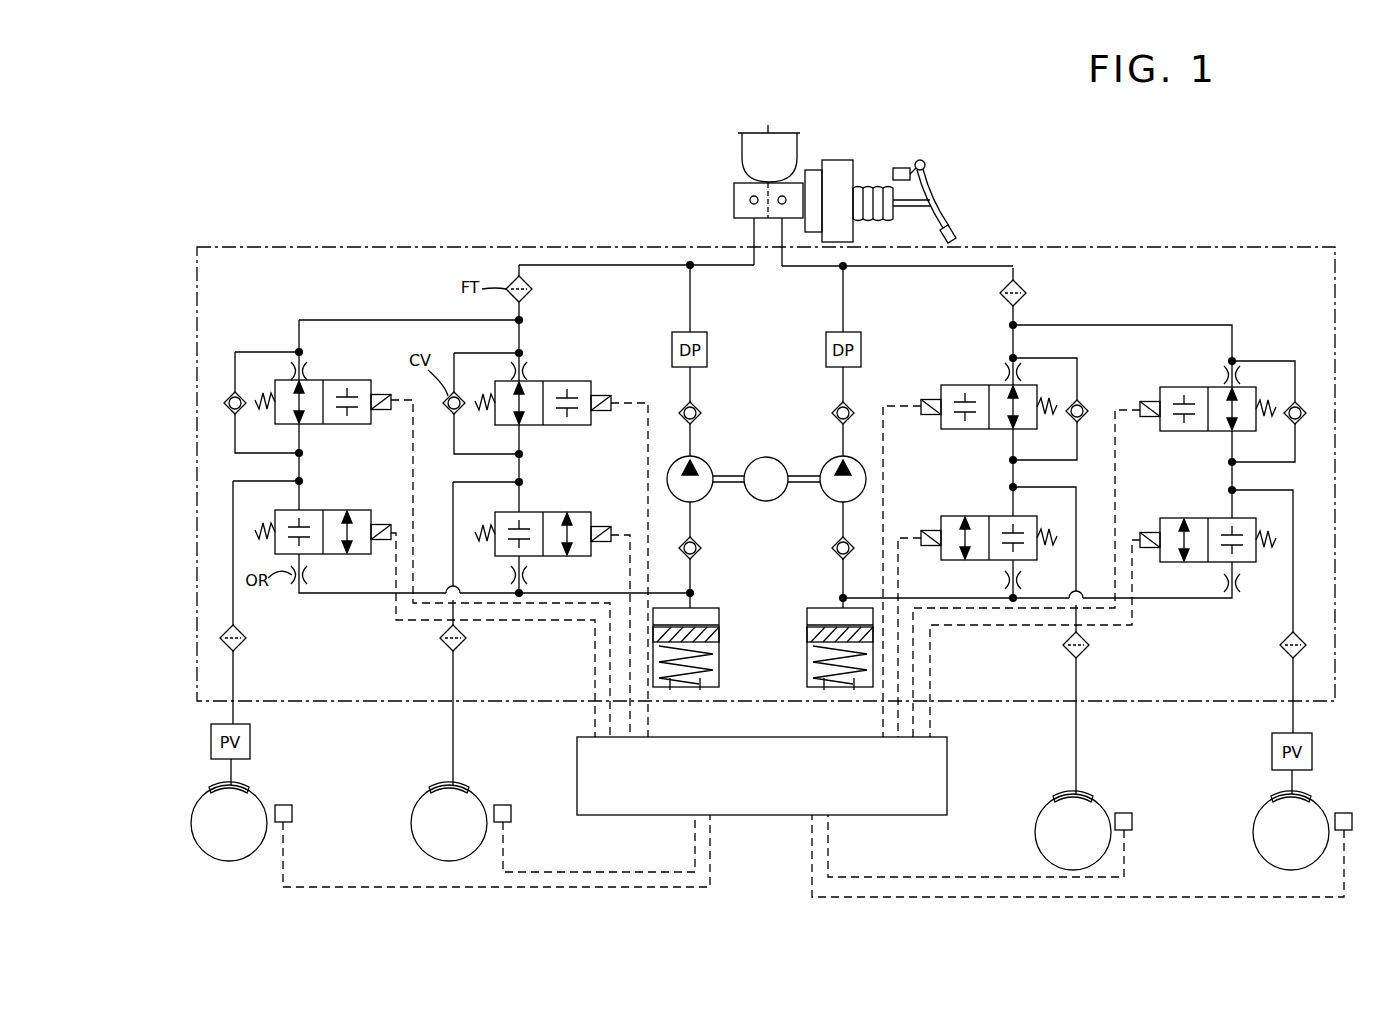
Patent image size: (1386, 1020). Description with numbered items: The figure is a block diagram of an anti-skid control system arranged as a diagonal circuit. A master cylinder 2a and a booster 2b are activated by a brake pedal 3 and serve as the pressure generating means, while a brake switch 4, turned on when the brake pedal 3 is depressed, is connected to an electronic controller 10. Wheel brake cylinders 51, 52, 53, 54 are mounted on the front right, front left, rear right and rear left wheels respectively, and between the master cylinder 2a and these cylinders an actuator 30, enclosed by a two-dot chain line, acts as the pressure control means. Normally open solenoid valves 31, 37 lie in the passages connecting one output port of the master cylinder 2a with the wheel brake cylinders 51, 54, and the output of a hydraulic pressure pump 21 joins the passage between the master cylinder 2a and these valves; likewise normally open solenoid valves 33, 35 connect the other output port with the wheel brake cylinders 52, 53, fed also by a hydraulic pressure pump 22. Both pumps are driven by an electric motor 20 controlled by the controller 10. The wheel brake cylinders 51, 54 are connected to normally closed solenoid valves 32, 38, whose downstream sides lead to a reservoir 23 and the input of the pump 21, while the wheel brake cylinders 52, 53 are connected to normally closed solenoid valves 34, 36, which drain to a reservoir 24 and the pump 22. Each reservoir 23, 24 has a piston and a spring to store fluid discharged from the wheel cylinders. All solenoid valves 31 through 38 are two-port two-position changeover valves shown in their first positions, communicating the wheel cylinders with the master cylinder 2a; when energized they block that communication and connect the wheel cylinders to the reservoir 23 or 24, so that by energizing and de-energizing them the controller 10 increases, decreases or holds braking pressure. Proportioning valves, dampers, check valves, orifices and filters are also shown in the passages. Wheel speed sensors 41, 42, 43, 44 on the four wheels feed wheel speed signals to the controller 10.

The master cylinder 2a is at (734, 196).
The booster 2b is at (822, 162).
The brake pedal 3 is at (936, 204).
The brake switch 4 is at (902, 168).
The electronic controller 10 is at (947, 737).
The electric motor 20 is at (768, 502).
The hydraulic pressure pump 21 is at (705, 462).
The hydraulic pressure pump 22 is at (830, 462).
The reservoir 23 is at (708, 608).
The reservoir 24 is at (828, 608).
The actuator 30 is at (1115, 247).
The normally open solenoid valve 31 is at (543, 381).
The normally closed solenoid valve 32 is at (540, 512).
The normally open solenoid valve 33 is at (992, 385).
The normally closed solenoid valve 34 is at (988, 516).
The normally open solenoid valve 35 is at (1209, 387).
The normally closed solenoid valve 36 is at (1208, 518).
The normally open solenoid valve 37 is at (323, 380).
The normally closed solenoid valve 38 is at (320, 510).
The wheel speed sensor 41 is at (512, 805).
The wheel speed sensor 42 is at (1133, 813).
The wheel speed sensor 43 is at (1353, 813).
The wheel speed sensor 44 is at (292, 805).
The wheel brake cylinder 51 is at (470, 786).
The wheel brake cylinder 52 is at (1094, 793).
The wheel brake cylinder 53 is at (1312, 793).
The wheel brake cylinder 54 is at (248, 786).